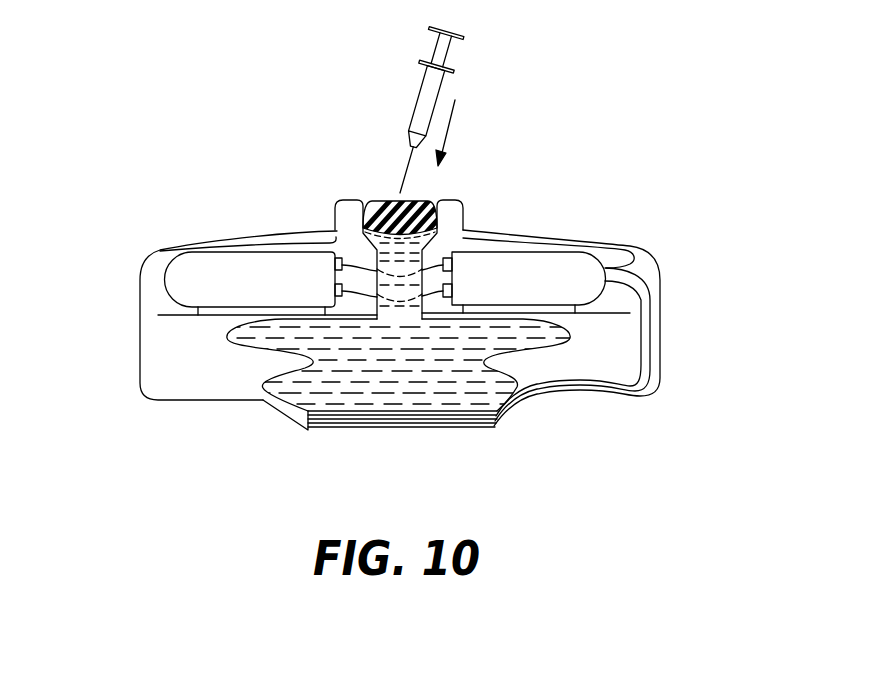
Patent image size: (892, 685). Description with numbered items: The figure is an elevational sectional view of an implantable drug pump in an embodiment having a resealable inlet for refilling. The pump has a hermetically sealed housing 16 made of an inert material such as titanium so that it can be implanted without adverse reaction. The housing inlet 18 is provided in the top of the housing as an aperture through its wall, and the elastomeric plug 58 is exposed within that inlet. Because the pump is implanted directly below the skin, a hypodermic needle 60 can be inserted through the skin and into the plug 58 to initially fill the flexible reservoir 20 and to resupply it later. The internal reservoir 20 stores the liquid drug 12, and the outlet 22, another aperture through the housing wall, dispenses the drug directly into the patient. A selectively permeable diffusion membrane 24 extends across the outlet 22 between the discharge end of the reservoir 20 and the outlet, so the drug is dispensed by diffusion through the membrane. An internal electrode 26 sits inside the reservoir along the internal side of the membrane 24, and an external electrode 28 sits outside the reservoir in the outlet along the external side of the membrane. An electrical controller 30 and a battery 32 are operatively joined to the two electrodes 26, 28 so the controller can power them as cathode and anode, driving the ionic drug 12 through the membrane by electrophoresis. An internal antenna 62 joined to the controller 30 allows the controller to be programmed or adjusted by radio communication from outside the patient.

The liquid drug 12 is at (392, 388).
The housing 16 is at (660, 268).
The inlet 18 is at (433, 198).
The reservoir 20 is at (233, 337).
The outlet 22 is at (308, 431).
The diffusion membrane 24 is at (372, 420).
The internal electrode 26 is at (422, 411).
The external electrode 28 is at (428, 428).
The electrical controller 30 is at (520, 252).
The battery 32 is at (165, 278).
The elastomeric plug 58 is at (373, 198).
The hypodermic needle 60 is at (415, 90).
The internal antenna 62 is at (310, 238).